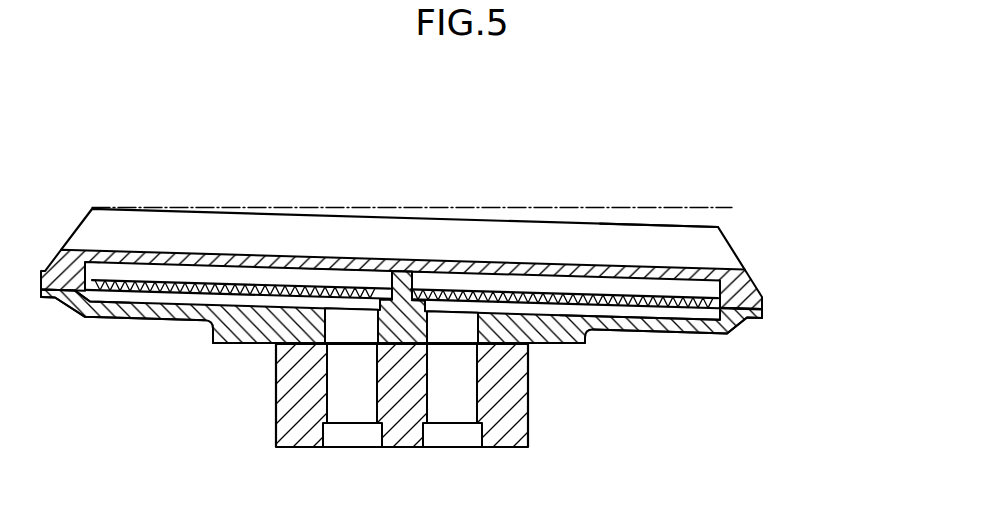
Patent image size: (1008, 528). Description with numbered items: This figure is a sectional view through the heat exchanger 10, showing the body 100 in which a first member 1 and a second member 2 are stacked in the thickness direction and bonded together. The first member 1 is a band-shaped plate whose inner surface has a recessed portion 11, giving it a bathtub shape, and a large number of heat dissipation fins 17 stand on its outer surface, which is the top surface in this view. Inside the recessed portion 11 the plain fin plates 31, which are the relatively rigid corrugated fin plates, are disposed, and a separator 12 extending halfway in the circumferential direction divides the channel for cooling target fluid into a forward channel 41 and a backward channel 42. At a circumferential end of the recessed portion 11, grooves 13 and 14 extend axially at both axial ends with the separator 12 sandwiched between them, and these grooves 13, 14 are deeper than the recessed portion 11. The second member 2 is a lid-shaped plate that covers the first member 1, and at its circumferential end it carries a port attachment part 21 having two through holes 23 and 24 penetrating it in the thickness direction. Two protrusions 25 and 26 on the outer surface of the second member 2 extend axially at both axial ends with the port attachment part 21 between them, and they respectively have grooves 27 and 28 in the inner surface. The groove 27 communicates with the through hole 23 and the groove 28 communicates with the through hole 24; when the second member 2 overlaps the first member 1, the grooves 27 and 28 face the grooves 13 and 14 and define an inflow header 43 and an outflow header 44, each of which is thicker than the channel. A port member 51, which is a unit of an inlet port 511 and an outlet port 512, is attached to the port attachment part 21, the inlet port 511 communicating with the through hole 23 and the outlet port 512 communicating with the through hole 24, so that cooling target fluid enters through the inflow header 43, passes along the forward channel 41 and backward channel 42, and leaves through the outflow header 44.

The heat exchanger 10 is at (762, 135).
The body 100 is at (818, 258).
The first member 1 is at (760, 289).
The second member 2 is at (750, 322).
The recessed portion 11 is at (118, 285).
The separator 12 is at (430, 282).
The groove 13 is at (496, 278).
The groove 14 is at (336, 277).
The heat dissipation fins 17 is at (702, 225).
The port attachment part 21 is at (230, 345).
The through hole 23 is at (472, 340).
The through hole 24 is at (302, 384).
The protrusion 25 is at (672, 333).
The protrusion 26 is at (155, 320).
The groove 27 is at (630, 318).
The groove 28 is at (108, 302).
The plain fin plates 31 is at (226, 285).
The forward channel 41 is at (550, 292).
The backward channel 42 is at (172, 285).
The inflow header 43 is at (645, 290).
The outflow header 44 is at (280, 275).
The port member 51 is at (527, 433).
The inlet port 511 is at (463, 407).
The outlet port 512 is at (328, 405).